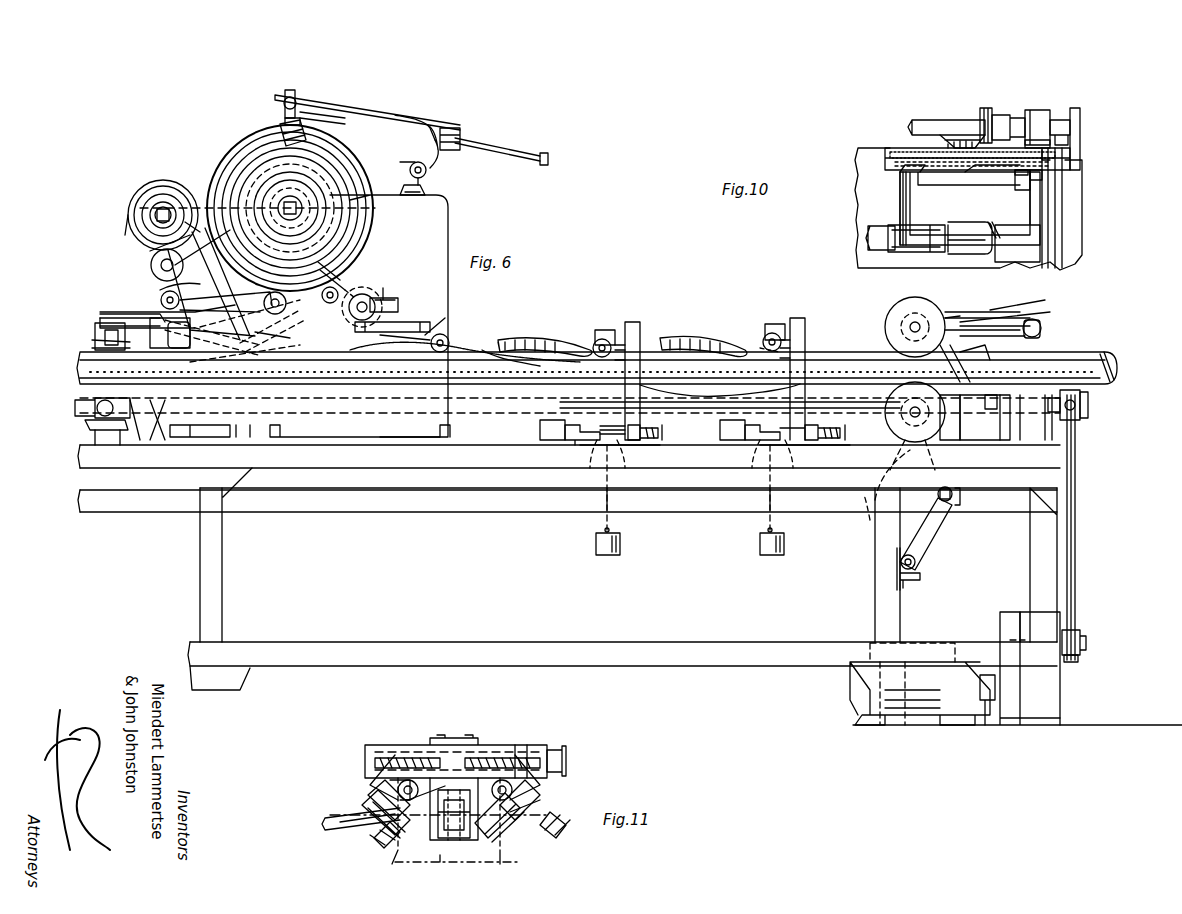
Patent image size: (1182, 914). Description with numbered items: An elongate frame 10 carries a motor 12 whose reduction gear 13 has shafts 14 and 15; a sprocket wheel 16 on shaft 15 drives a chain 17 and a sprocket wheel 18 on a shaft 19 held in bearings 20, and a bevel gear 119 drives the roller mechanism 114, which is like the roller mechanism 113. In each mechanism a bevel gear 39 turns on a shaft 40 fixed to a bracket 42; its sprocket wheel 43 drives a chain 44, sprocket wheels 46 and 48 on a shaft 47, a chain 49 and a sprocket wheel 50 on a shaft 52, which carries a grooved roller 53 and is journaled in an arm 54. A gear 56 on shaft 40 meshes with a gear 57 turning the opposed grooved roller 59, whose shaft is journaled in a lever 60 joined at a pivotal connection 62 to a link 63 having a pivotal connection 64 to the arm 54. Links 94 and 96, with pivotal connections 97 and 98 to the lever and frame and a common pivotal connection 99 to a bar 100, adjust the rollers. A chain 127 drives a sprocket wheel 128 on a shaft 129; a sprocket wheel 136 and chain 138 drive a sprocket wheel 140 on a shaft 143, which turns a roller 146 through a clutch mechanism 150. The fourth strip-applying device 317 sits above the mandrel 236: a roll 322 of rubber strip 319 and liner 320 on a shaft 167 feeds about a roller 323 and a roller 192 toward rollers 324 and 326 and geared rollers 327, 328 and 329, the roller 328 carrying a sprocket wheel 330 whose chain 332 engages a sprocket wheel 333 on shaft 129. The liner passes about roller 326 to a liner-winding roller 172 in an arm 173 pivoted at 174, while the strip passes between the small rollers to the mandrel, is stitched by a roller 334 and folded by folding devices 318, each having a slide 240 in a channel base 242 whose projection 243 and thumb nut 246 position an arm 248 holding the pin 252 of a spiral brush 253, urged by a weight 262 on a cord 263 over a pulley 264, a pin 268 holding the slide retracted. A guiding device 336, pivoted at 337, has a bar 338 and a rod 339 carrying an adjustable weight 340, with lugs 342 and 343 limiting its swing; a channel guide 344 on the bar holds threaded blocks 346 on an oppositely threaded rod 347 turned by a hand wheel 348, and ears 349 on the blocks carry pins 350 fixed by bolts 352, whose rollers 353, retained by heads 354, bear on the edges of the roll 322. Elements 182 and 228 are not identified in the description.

In FIG. 6, the elongate frame 10 is at (222, 600).
In FIG. 10, the elongate frame 10 is at (1082, 250).
In FIG. 6, the motor 12 is at (918, 728).
In FIG. 6, the reduction gear 13 is at (1020, 726).
In FIG. 6, the shaft 14 is at (990, 726).
In FIG. 6, the shaft 15 is at (1086, 643).
In FIG. 6, the sprocket wheel 16 is at (1078, 660).
In FIG. 6, the chain 17 is at (1076, 558).
In FIG. 10, the chain 17 is at (1065, 172).
In FIG. 6, the sprocket wheel 18 is at (1085, 415).
In FIG. 10, the sprocket wheel 18 is at (1080, 115).
In FIG. 6, the shaft 19 is at (1092, 410).
In FIG. 10, the shaft 19 is at (1070, 128).
In FIG. 6, the bearings 20 is at (1058, 412).
In FIG. 10, the bearings 20 is at (1010, 125).
In FIG. 10, the bevel gear 39 is at (950, 135).
In FIG. 6, the shaft 40 is at (75, 405).
In FIG. 10, the shaft 40 is at (990, 125).
In FIG. 6, the bracket 42 is at (168, 445).
In FIG. 10, the bracket 42 is at (1035, 185).
In FIG. 10, the sprocket wheel 43 is at (930, 150).
In FIG. 6, the chain 44 is at (80, 364).
In FIG. 10, the chain 44 is at (1038, 148).
In FIG. 10, the sprocket wheel 46 is at (1052, 146).
In FIG. 6, the shaft 47 is at (160, 326).
In FIG. 10, the shaft 47 is at (1030, 188).
In FIG. 10, the sprocket wheel 48 is at (1042, 177).
In FIG. 6, the chain 49 is at (118, 312).
In FIG. 10, the chain 49 is at (1042, 160).
In FIG. 10, the sprocket wheel 50 is at (915, 158).
In FIG. 6, the shaft 52 is at (900, 322).
In FIG. 10, the shaft 52 is at (900, 258).
In FIG. 6, the grooved roller 53 is at (100, 314).
In FIG. 10, the grooved roller 53 is at (880, 239).
In FIG. 6, the arm 54 is at (962, 312).
In FIG. 10, the arm 54 is at (900, 196).
In FIG. 6, the gear 56 is at (90, 428).
In FIG. 10, the gear 56 is at (940, 178).
In FIG. 10, the gear 57 is at (885, 160).
In FIG. 6, the second grooved roller 59 is at (885, 414).
In FIG. 6, the lever 60 is at (95, 440).
In FIG. 6, the pivotal connection 62 is at (142, 445).
In FIG. 6, the link 63 is at (90, 348).
In FIG. 6, the pivotal connection 64 is at (95, 331).
In FIG. 6, the link 94 is at (925, 545).
In FIG. 6, the link 96 is at (920, 565).
In FIG. 6, the pivotal connection 97 is at (878, 489).
In FIG. 6, the pivotal connection 98 is at (918, 582).
In FIG. 6, the common pivotal connection 99 is at (960, 505).
In FIG. 6, the horizontally extending bar 100 is at (852, 505).
In FIG. 6, the roller mechanism 113 is at (68, 305).
In FIG. 6, the roller mechanism 114 is at (1002, 311).
In FIG. 10, the roller mechanism 114 is at (886, 220).
In FIG. 10, the bevel gear 119 is at (990, 108).
In FIG. 6, the chain 127 is at (200, 427).
In FIG. 6, the sprocket wheel 128 is at (395, 313).
In FIG. 6, the shaft 129 is at (355, 288).
In FIG. 6, the sprocket wheel 136 is at (378, 298).
In FIG. 6, the chain 138 is at (178, 333).
In FIG. 6, the sprocket wheel 140 is at (211, 281).
In FIG. 6, the shaft 143 is at (160, 262).
In FIG. 6, the roller 146 is at (152, 252).
In FIG. 6, the clutch mechanism 150 is at (157, 294).
In FIG. 6, the shaft 167 is at (287, 203).
In FIG. 6, the liner-winding roller 172 is at (160, 192).
In FIG. 6, the arm 173 is at (164, 208).
In FIG. 6, the pivotal mounting 174 is at (180, 196).
In FIG. 6, the housing 182 is at (402, 182).
In FIG. 6, the roller 192 is at (370, 292).
In FIG. 6, the arm 228 is at (440, 325).
In FIG. 6, the mandrel 236 is at (80, 374).
In FIG. 10, the mandrel 236 is at (990, 256).
In FIG. 6, the slide 240 is at (745, 432).
In FIG. 6, the channel base 242 is at (612, 438).
In FIG. 6, the integral projection 243 is at (638, 322).
In FIG. 6, the thumb nut 246 is at (642, 340).
In FIG. 6, the arm 248 is at (598, 342).
In FIG. 6, the pin 252 is at (768, 334).
In FIG. 6, the stiff spiral brush 253 is at (520, 342).
In FIG. 6, the weight 262 is at (614, 556).
In FIG. 6, the cable or cord 263 is at (604, 524).
In FIG. 6, the pulley 264 is at (598, 468).
In FIG. 6, the pin 268 is at (650, 434).
In FIG. 6, the fourth strip-applying device 317 is at (121, 228).
In FIG. 6, the folding devices 318 is at (617, 320).
In FIG. 6, the rubber strip material 319 is at (340, 275).
In FIG. 6, the liner material 320 is at (186, 304).
In FIG. 6, the roll 322 is at (322, 158).
In FIG. 11, the roll 322 is at (398, 862).
In FIG. 6, the roller 323 is at (350, 275).
In FIG. 6, the roller 324 is at (233, 305).
In FIG. 6, the roller 326 is at (232, 327).
In FIG. 6, the roller 327 is at (317, 294).
In FIG. 6, the roller 328 is at (251, 336).
In FIG. 6, the roller 329 is at (252, 434).
In FIG. 6, the sprocket wheel 330 is at (238, 427).
In FIG. 6, the chain 332 is at (360, 423).
In FIG. 6, the sprocket wheel 333 is at (404, 296).
In FIG. 6, the roller 334 is at (450, 336).
In FIG. 6, the guiding device 336 is at (436, 130).
In FIG. 6, the pivotal mounting 337 is at (427, 176).
In FIG. 11, the pivotal mounting 337 is at (325, 821).
In FIG. 6, the bar 338 is at (390, 118).
In FIG. 11, the bar 338 is at (455, 738).
In FIG. 6, the rod 339 is at (505, 156).
In FIG. 6, the adjustable weight 340 is at (460, 138).
In FIG. 6, the lug 342 is at (454, 132).
In FIG. 11, the lug 342 is at (452, 840).
In FIG. 6, the lug 343 is at (410, 160).
In FIG. 6, the channel guide 344 is at (320, 104).
In FIG. 11, the channel guide 344 is at (542, 745).
In FIG. 6, the internally threaded blocks 346 is at (310, 124).
In FIG. 11, the internally threaded blocks 346 is at (412, 745).
In FIG. 6, the rod 347 is at (285, 120).
In FIG. 11, the rod 347 is at (530, 745).
In FIG. 6, the hand wheel 348 is at (282, 100).
In FIG. 11, the hand wheel 348 is at (568, 764).
In FIG. 11, the ears 349 is at (398, 788).
In FIG. 11, the pins 350 is at (368, 795).
In FIG. 11, the bolts 352 is at (400, 778).
In FIG. 6, the rollers 353 is at (280, 132).
In FIG. 11, the rollers 353 is at (390, 838).
In FIG. 11, the heads 354 is at (370, 840).